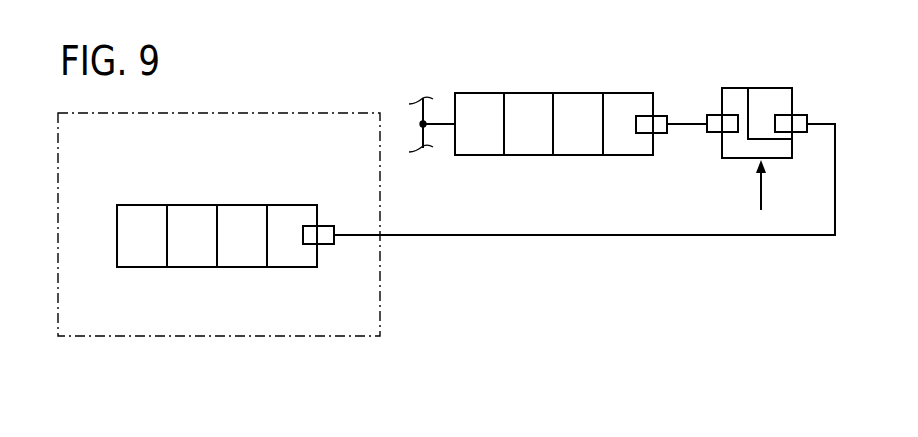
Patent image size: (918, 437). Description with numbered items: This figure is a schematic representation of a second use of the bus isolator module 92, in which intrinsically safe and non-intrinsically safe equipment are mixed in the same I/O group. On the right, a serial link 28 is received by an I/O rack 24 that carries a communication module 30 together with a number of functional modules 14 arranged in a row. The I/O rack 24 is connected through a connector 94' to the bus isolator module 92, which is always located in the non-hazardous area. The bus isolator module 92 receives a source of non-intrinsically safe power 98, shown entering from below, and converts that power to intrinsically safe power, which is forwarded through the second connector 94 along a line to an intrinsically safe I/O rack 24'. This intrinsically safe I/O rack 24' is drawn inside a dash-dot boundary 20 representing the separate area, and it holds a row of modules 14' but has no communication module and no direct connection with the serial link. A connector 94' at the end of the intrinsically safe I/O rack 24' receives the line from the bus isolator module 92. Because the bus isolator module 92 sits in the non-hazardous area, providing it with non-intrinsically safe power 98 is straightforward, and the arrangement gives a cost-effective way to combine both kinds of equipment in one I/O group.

The remote unit enclosure 20 is at (58, 170).
The I/O rack 24 is at (554, 88).
The intrinsically safe I/O rack 24' is at (217, 206).
The functional module 14 is at (570, 124).
The remote module 14' is at (215, 236).
The communication module 30 is at (489, 138).
The serial link 28 is at (447, 122).
The bus isolator module 92 is at (755, 88).
The second connector 94 is at (806, 93).
The connector 94' is at (520, 151).
The source of non-intrinsically safe power 98 is at (758, 200).